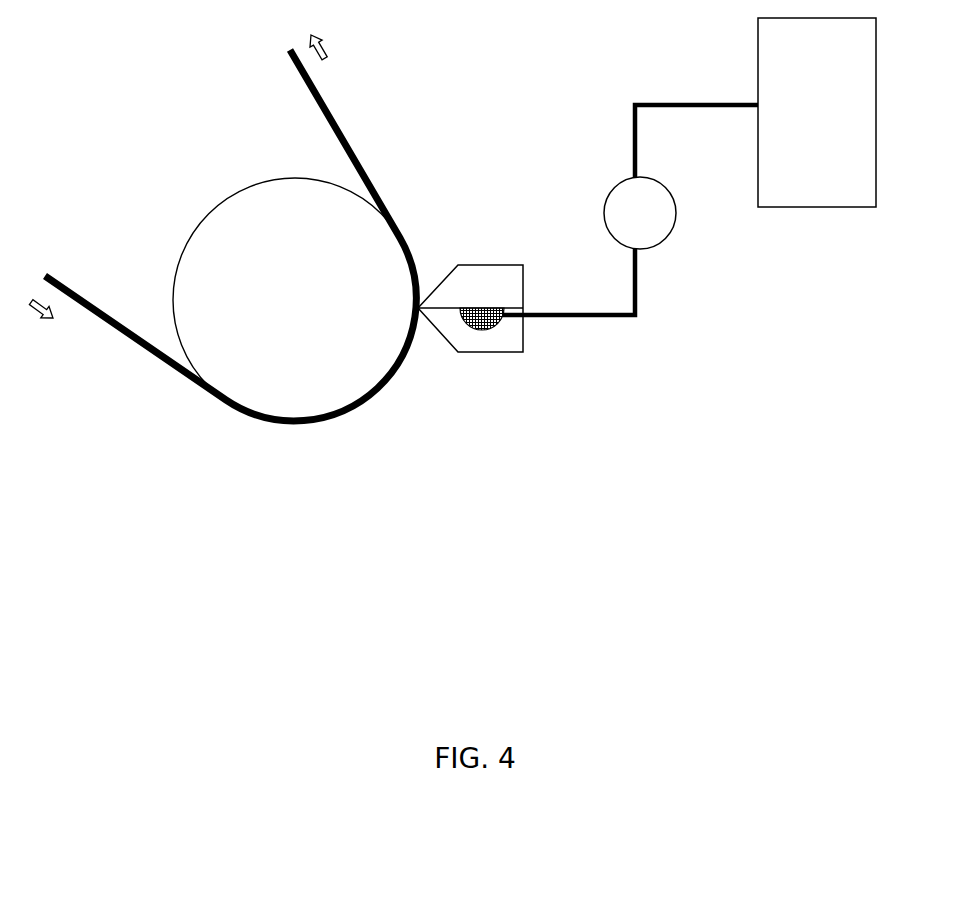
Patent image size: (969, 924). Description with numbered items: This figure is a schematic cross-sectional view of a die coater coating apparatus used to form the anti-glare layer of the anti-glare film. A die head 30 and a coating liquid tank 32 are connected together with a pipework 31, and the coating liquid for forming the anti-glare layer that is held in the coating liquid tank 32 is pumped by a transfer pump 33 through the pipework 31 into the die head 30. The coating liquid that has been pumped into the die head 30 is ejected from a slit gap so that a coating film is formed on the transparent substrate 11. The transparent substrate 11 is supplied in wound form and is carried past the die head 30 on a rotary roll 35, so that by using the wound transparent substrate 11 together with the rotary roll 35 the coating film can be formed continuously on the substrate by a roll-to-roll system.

The transparent substrate 11 is at (135, 343).
The rotary roll 35 is at (293, 368).
The die head 30 is at (502, 338).
The pipework 31 is at (638, 302).
The coating liquid tank 32 is at (807, 163).
The transfer pump 33 is at (617, 227).